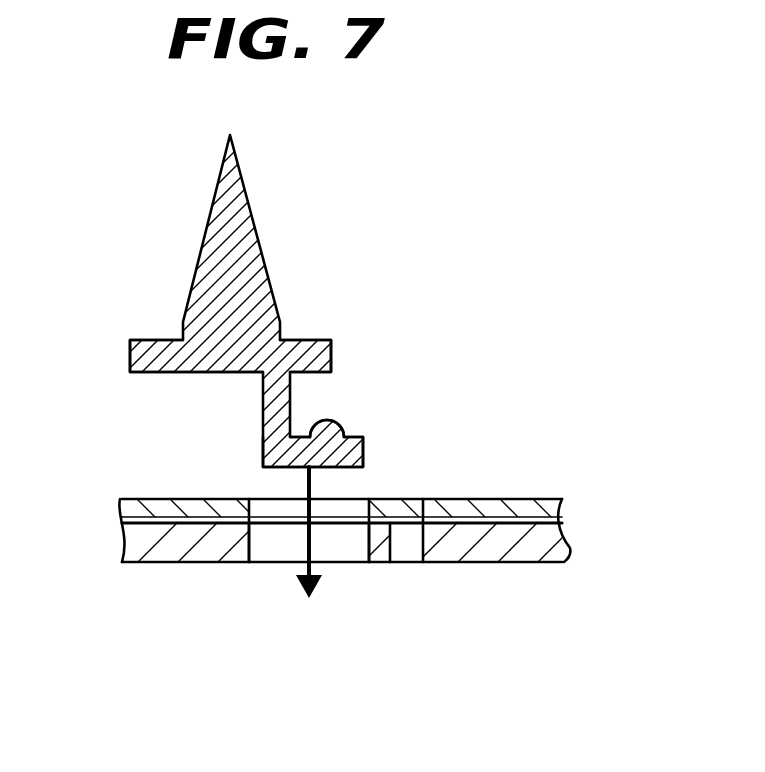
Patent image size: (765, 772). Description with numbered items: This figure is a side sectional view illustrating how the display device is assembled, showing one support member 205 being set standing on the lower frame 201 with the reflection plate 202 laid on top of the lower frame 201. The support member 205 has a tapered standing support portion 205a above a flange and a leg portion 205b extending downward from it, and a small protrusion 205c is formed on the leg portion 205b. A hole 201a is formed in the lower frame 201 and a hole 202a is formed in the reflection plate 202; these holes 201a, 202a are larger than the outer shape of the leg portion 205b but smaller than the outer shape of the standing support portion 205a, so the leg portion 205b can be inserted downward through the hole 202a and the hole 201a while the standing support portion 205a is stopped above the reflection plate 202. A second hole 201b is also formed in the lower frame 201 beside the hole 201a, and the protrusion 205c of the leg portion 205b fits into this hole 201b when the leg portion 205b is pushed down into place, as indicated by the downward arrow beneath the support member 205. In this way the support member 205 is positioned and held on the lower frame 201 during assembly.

The support member 205 is at (207, 211).
The standing support portion 205a is at (148, 350).
The leg portion 205b is at (293, 450).
The protrusion 205c is at (338, 414).
The lower frame 201 is at (542, 542).
The hole 201a is at (338, 546).
The hole 201b is at (408, 536).
The reflection plate 202 is at (542, 510).
The hole 202a is at (281, 511).